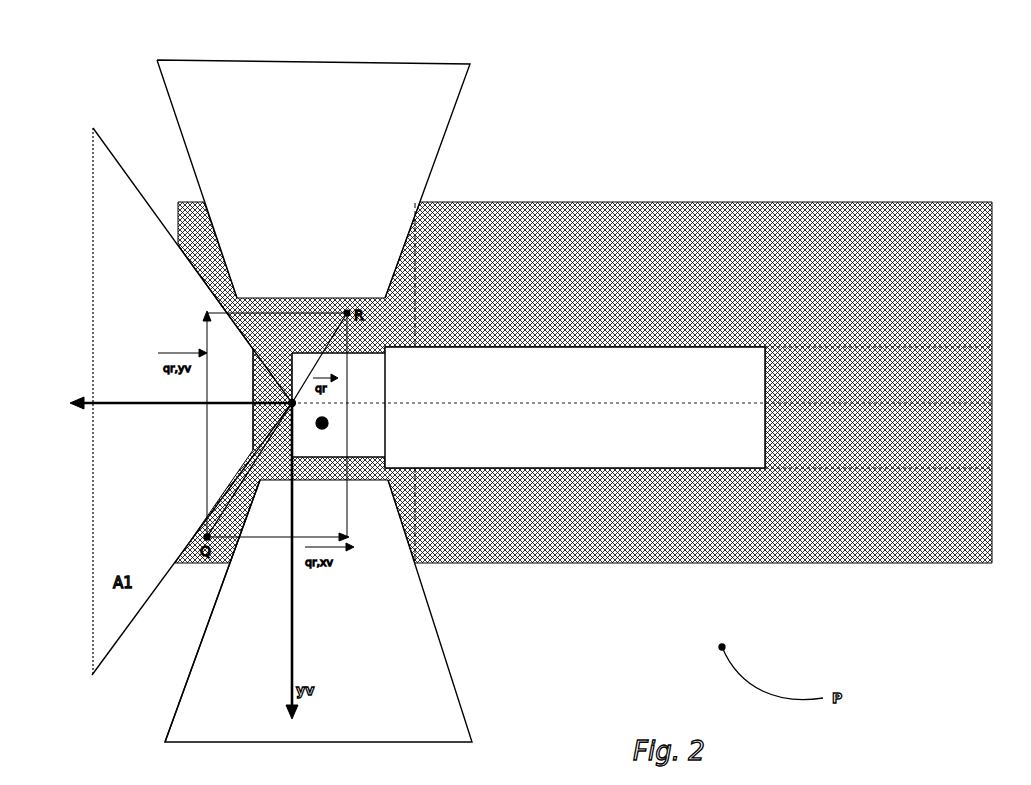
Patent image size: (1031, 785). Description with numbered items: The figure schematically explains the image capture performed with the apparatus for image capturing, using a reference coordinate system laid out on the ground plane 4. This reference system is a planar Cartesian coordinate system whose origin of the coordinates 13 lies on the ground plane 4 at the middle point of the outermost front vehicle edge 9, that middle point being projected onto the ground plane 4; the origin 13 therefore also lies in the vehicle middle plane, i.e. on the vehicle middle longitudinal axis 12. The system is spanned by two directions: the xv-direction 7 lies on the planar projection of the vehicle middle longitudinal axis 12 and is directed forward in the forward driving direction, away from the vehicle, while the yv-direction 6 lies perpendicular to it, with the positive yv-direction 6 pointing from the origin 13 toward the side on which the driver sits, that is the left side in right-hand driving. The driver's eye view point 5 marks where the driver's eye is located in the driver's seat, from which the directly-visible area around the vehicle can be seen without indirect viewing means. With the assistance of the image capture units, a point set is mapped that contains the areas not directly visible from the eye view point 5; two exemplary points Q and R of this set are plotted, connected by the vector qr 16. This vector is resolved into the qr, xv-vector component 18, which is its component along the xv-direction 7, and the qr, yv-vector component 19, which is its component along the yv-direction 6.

The ground plane 4 is at (706, 160).
The eye view point 5 is at (317, 427).
The yv-direction 6 is at (292, 657).
The xv-direction 7 is at (152, 407).
The outermost front vehicle edge 9 is at (250, 354).
The vehicle middle longitudinal axis 12 is at (705, 407).
The origin of the coordinates 13 is at (253, 432).
The vector qr 16 is at (330, 338).
The qr, xv-vector component 18 is at (265, 540).
The qr, yv-vector component 19 is at (207, 390).